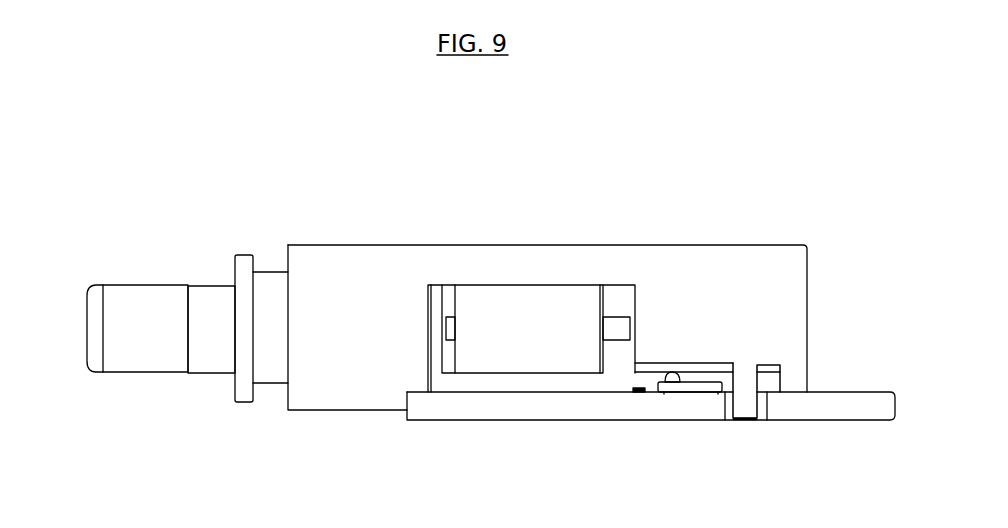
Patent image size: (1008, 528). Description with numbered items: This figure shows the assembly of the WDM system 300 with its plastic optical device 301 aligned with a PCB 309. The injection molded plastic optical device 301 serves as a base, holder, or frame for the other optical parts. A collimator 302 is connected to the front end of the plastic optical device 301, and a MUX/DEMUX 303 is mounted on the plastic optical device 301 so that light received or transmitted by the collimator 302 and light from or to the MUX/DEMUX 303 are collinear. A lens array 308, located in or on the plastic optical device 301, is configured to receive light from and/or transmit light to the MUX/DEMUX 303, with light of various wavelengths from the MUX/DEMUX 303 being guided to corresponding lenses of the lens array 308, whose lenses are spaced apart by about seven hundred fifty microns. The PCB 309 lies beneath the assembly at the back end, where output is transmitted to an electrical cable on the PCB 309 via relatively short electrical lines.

The WDM 300 is at (186, 129).
The plastic optical device 301 is at (700, 307).
The collimator 302 is at (143, 308).
The MUX/DEMUX 303 is at (500, 303).
The lens array 308 is at (677, 383).
The PCB 309 is at (490, 407).